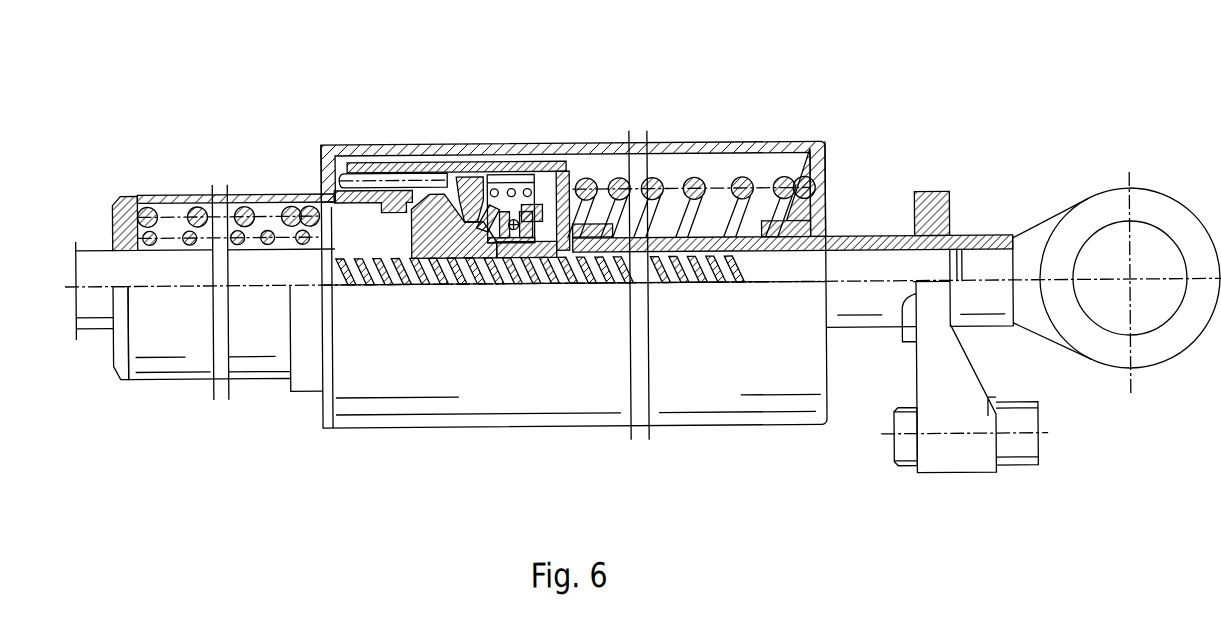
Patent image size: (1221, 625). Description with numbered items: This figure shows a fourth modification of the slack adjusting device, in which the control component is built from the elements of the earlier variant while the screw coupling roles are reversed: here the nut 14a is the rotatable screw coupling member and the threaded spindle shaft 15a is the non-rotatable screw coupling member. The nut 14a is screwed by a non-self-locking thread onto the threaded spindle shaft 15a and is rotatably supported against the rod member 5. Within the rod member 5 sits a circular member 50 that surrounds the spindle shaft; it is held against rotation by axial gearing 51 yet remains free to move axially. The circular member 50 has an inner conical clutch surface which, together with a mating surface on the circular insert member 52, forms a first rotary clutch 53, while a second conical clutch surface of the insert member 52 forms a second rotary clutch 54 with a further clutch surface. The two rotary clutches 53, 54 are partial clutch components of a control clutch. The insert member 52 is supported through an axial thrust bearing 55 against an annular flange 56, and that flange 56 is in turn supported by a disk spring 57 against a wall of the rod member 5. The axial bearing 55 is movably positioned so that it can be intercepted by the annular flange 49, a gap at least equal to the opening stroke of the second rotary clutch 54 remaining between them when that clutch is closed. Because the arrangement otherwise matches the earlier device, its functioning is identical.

The rod member 5 is at (853, 239).
The nut 14a is at (437, 236).
The threaded spindle shaft 15a is at (695, 276).
The annular flange 49 is at (535, 231).
The circular member 50 is at (472, 174).
The axial gearing 51 is at (511, 179).
The circular insert member 52 is at (488, 242).
The first rotary clutch 53 is at (490, 177).
The second rotary clutch 54 is at (480, 234).
The axial thrust bearing 55 is at (514, 231).
The annular flange 56 is at (556, 255).
The disk spring 57 is at (555, 188).